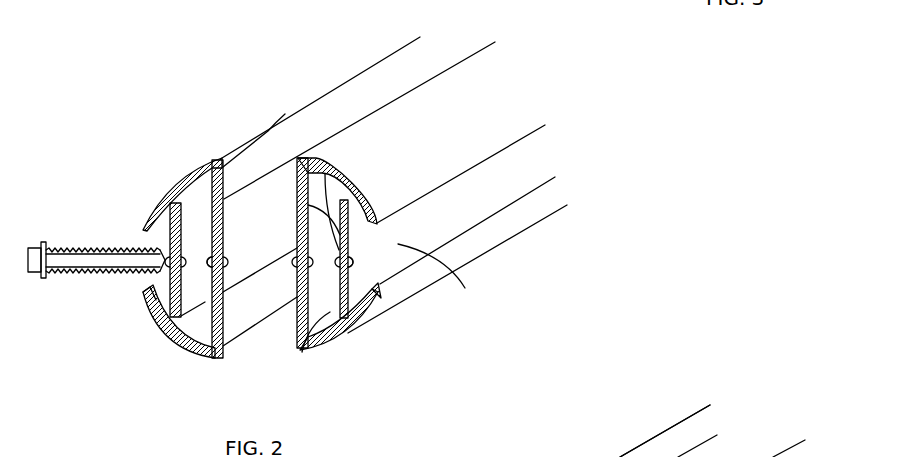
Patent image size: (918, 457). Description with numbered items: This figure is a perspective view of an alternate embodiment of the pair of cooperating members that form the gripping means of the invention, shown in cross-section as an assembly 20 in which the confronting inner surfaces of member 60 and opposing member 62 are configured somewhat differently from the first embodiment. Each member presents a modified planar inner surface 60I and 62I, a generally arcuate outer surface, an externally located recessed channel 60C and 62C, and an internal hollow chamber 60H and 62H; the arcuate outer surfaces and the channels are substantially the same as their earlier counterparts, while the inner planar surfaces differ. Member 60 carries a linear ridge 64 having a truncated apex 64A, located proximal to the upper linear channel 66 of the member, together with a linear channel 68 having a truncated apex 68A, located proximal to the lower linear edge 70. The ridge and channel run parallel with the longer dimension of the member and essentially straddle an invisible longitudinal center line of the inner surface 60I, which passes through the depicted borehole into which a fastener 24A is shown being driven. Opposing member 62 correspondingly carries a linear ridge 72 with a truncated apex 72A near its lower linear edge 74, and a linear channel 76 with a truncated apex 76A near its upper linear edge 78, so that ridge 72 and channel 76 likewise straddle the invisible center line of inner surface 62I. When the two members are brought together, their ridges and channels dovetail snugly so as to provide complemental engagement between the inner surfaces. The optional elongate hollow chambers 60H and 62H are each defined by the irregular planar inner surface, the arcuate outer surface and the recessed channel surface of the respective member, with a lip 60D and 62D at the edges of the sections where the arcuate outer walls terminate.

The hanger assembly 20 is at (551, 448).
The fastener screw 24A is at (117, 273).
The member 60 is at (233, 144).
The recessed channel 60C is at (170, 242).
The top shell of first member 60D is at (160, 195).
The hollow chamber 60H is at (173, 303).
The inner planar surface 60I is at (226, 277).
The opposing member 62 is at (536, 226).
The recessed channel 62C is at (442, 278).
The hook lip of second member 62D is at (381, 310).
The hollow chamber 62H is at (326, 164).
The inner planar surface 62I is at (297, 232).
The linear ridge 64 is at (212, 228).
The truncated apex 64A is at (235, 188).
The upper linear channel 66 is at (284, 112).
The linear channel 68 is at (230, 320).
The truncated apex 68A is at (172, 323).
The lower linear edge 70 is at (257, 326).
The linear ridge 72 is at (338, 323).
The truncated apex 72A is at (283, 315).
The lower linear edge 74 is at (303, 350).
The linear channel 76 is at (298, 181).
The truncated apex 76A is at (350, 240).
The upper linear edge 78 is at (458, 62).